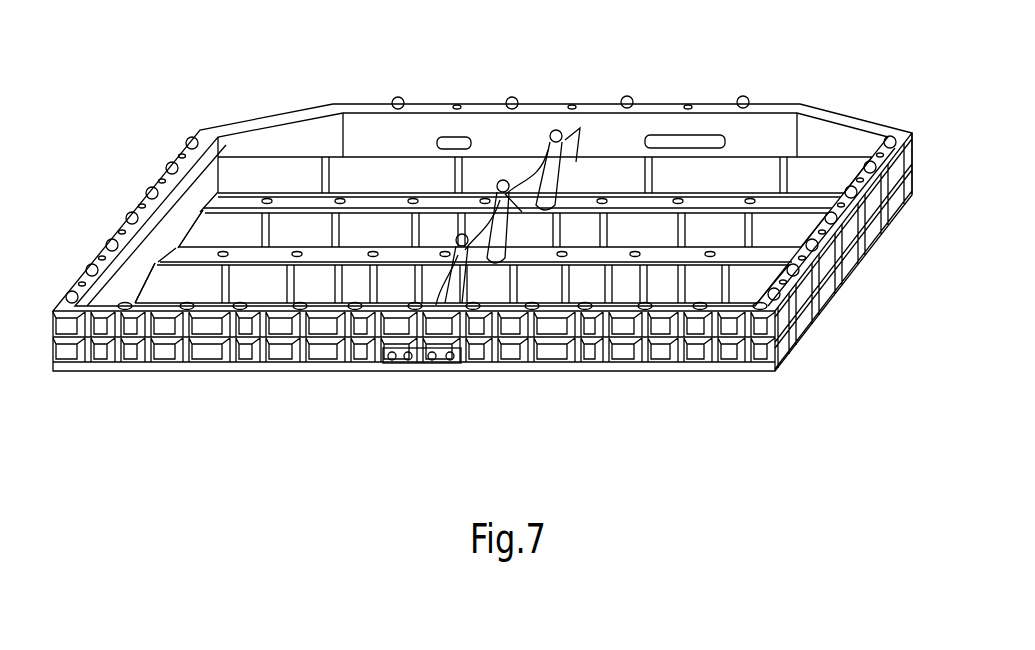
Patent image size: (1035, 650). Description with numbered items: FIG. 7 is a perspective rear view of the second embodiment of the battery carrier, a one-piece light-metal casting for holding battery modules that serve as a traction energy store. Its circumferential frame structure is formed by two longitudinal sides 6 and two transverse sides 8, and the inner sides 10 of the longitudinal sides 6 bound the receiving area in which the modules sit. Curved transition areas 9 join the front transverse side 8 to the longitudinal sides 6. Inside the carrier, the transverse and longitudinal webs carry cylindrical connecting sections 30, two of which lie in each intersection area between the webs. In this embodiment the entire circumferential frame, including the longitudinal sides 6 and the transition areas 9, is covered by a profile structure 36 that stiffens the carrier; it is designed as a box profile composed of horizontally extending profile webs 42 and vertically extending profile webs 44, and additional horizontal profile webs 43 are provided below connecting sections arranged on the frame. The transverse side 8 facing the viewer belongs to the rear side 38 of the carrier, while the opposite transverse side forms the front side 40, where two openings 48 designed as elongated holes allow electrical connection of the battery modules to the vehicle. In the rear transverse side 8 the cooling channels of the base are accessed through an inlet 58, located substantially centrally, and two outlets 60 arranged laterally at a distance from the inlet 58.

The longitudinal side 6 is at (828, 347).
The transverse side 8 is at (86, 392).
The curved transition area 9 is at (262, 103).
The inner side of the longitudinal side 10 is at (162, 236).
The connecting section 30 is at (549, 133).
The profile structure 36 is at (935, 220).
The rear side 38 is at (493, 393).
The front side 40 is at (773, 78).
The horizontally extending profile web 42 is at (218, 337).
The horizontal profile web 43 is at (128, 367).
The vertically extending profile web 44 is at (307, 353).
The opening 48 is at (453, 137).
The inlet 58 is at (420, 370).
The outlet 60 is at (388, 370).